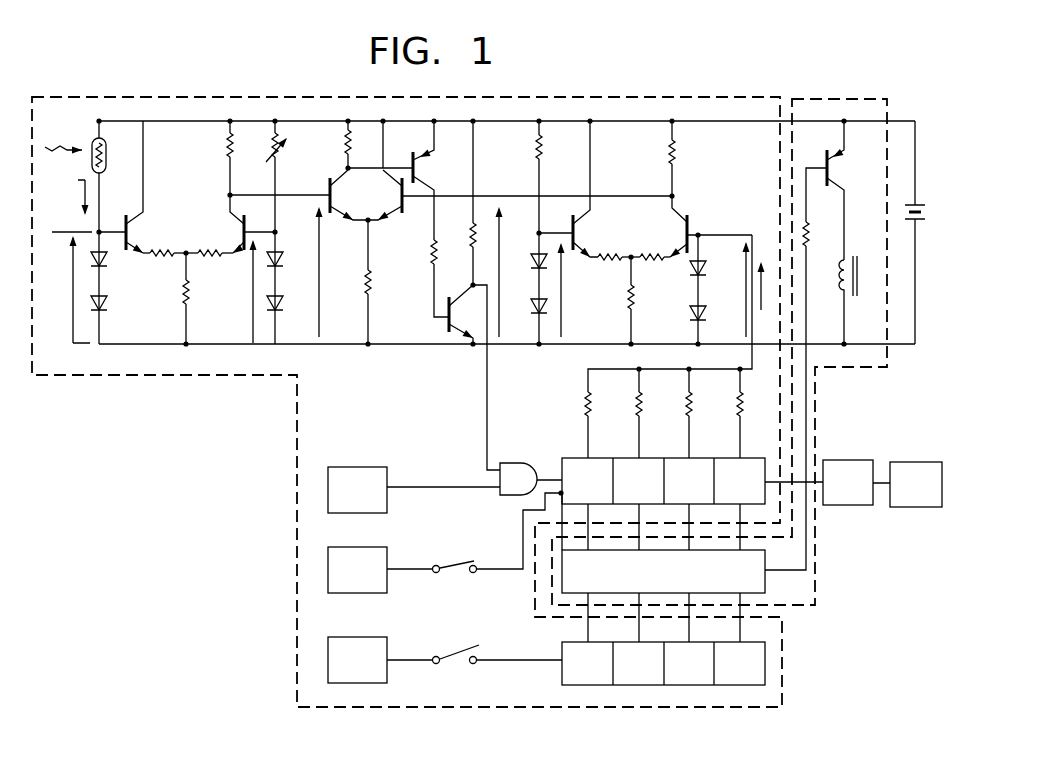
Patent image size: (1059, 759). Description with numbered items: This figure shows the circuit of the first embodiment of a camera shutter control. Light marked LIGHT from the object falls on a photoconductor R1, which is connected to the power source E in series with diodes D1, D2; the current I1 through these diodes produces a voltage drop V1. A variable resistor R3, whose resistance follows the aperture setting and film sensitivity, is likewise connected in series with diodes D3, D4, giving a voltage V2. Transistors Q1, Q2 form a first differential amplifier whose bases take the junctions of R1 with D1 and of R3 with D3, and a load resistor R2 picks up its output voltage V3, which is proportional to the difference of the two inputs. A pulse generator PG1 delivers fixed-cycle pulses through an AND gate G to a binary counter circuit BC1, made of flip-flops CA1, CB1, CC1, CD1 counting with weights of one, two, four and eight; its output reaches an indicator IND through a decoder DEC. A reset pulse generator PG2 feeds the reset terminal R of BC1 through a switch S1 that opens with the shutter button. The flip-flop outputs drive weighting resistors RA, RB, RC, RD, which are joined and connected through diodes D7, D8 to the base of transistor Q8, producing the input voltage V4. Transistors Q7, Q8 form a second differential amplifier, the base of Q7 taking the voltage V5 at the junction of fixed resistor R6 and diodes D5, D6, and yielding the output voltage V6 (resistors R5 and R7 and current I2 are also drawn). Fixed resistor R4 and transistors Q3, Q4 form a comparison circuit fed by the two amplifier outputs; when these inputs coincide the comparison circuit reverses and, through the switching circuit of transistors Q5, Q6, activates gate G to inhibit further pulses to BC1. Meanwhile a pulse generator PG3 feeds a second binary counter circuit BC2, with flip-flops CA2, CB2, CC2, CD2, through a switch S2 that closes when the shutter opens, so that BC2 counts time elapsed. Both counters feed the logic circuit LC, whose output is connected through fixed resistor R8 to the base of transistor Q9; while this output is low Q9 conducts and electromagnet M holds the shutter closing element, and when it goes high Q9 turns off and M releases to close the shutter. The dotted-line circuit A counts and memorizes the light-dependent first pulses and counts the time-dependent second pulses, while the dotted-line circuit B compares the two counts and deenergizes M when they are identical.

The circuit A is at (297, 430).
The circuit B is at (862, 98).
The incident light LIGHT is at (62, 136).
The photoconductor R1 is at (106, 151).
The load resistor R2 is at (226, 151).
The variable resistor R3 is at (286, 155).
The fixed resistor R4 is at (346, 146).
The resistor R5 is at (472, 234).
The fixed resistor R6 is at (536, 156).
The resistor R7 is at (679, 148).
The fixed resistor R8 is at (823, 238).
The weighting resistor RA is at (585, 409).
The weighting resistor RB is at (637, 409).
The weighting resistor RC is at (688, 409).
The weighting resistor RD is at (740, 409).
The transistor Q1 is at (135, 227).
The transistor Q2 is at (240, 229).
The transistor Q3 is at (349, 210).
The transistor Q4 is at (520, 210).
The transistor Q5 is at (429, 164).
The transistor Q6 is at (450, 300).
The transistor Q7 is at (590, 224).
The transistor Q8 is at (683, 234).
The transistor Q9 is at (839, 176).
The diode D1 is at (107, 264).
The diode D2 is at (107, 306).
The diode D3 is at (278, 266).
The diode D4 is at (278, 312).
The diode D5 is at (536, 264).
The diode D6 is at (536, 317).
The diode D7 is at (692, 270).
The diode D8 is at (692, 315).
The voltage drop V1 is at (73, 305).
The voltage V2 is at (252, 297).
The output voltage V3 is at (320, 292).
The input voltage V4 is at (745, 298).
The voltage V5 is at (563, 282).
The output voltage V6 is at (500, 226).
The current I1 is at (84, 183).
The current I2 is at (767, 294).
The electromagnet M is at (857, 256).
The power source E is at (928, 205).
The AND gate circuit G is at (518, 479).
The binary counter circuit BC1 is at (635, 468).
The binary counter circuit BC2 is at (702, 663).
The flip-flop CA1 is at (586, 482).
The flip-flop CB1 is at (637, 482).
The flip-flop CC1 is at (689, 482).
The flip-flop CD1 is at (738, 482).
The flip-flop CA2 is at (587, 664).
The flip-flop CB2 is at (638, 664).
The flip-flop CC2 is at (689, 664).
The flip-flop CD2 is at (739, 664).
The logic circuit LC is at (663, 571).
The reset terminal R is at (561, 504).
The pulse generator PG1 is at (357, 490).
The reset pulse generator PG2 is at (357, 570).
The pulse generator PG3 is at (357, 660).
The switch S1 is at (455, 562).
The switch S2 is at (460, 650).
The decoder DEC is at (848, 482).
The indicator IND is at (916, 484).